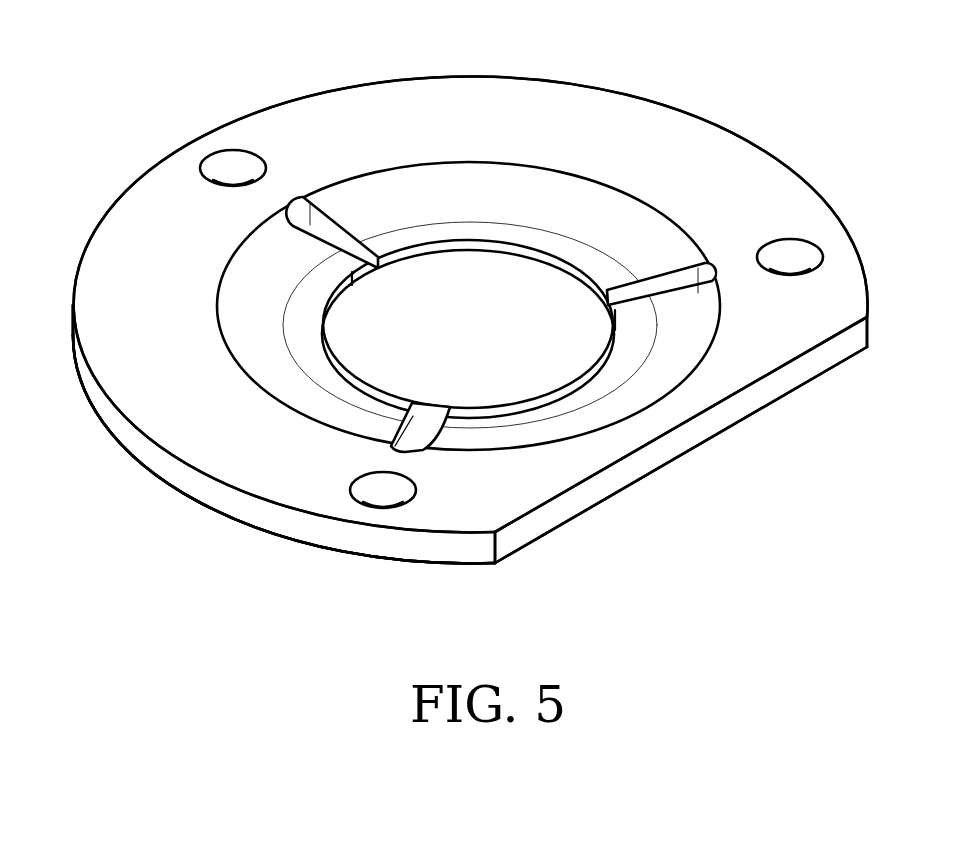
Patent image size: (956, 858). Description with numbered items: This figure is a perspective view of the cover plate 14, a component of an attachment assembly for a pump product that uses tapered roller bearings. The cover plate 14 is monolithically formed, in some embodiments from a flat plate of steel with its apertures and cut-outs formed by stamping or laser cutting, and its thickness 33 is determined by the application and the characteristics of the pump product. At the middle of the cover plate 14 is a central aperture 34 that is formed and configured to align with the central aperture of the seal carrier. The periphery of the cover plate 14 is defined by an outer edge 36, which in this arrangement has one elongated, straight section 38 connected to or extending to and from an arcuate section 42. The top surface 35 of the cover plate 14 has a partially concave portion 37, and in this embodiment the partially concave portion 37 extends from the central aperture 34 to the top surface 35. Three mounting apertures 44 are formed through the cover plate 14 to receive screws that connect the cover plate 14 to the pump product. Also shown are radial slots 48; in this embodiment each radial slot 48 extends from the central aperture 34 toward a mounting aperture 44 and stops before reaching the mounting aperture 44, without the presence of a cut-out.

The cover plate 14 is at (692, 59).
The thickness 33 is at (267, 515).
The central aperture 34 is at (481, 340).
The top surface 35 is at (512, 98).
The outer edge 36 is at (313, 584).
The partially concave portion 37 is at (423, 190).
The straight elongated section 38 is at (683, 441).
The arcuate section 42 is at (105, 408).
The mounting apertures 44 is at (232, 165).
The radial slot 48 is at (307, 241).